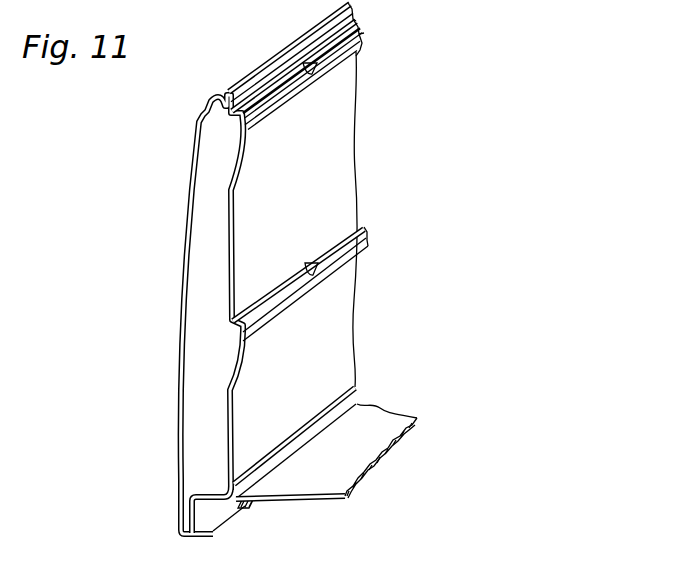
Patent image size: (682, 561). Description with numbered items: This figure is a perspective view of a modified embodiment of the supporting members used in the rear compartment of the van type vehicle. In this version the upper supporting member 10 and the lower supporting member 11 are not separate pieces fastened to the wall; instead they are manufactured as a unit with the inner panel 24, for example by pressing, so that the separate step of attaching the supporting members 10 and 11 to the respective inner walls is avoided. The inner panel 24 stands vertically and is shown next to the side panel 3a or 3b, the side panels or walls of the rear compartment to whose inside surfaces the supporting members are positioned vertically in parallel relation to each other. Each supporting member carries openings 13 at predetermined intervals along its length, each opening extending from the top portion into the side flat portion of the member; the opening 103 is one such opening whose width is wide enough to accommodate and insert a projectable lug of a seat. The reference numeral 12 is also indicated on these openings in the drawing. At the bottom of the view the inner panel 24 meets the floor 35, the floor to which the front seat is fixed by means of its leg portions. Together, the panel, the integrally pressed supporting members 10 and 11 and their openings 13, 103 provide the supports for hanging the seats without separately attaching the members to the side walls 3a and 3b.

The supporting member 10 is at (365, 33).
The supporting member 11 is at (366, 245).
The clip 12 is at (430, 175).
The openings 13 is at (430, 175).
The opening 103 is at (318, 66).
The inner panel 24 is at (338, 136).
The floor 35 is at (375, 426).
The side panel 3a is at (157, 314).
The side panel 3b is at (181, 258).